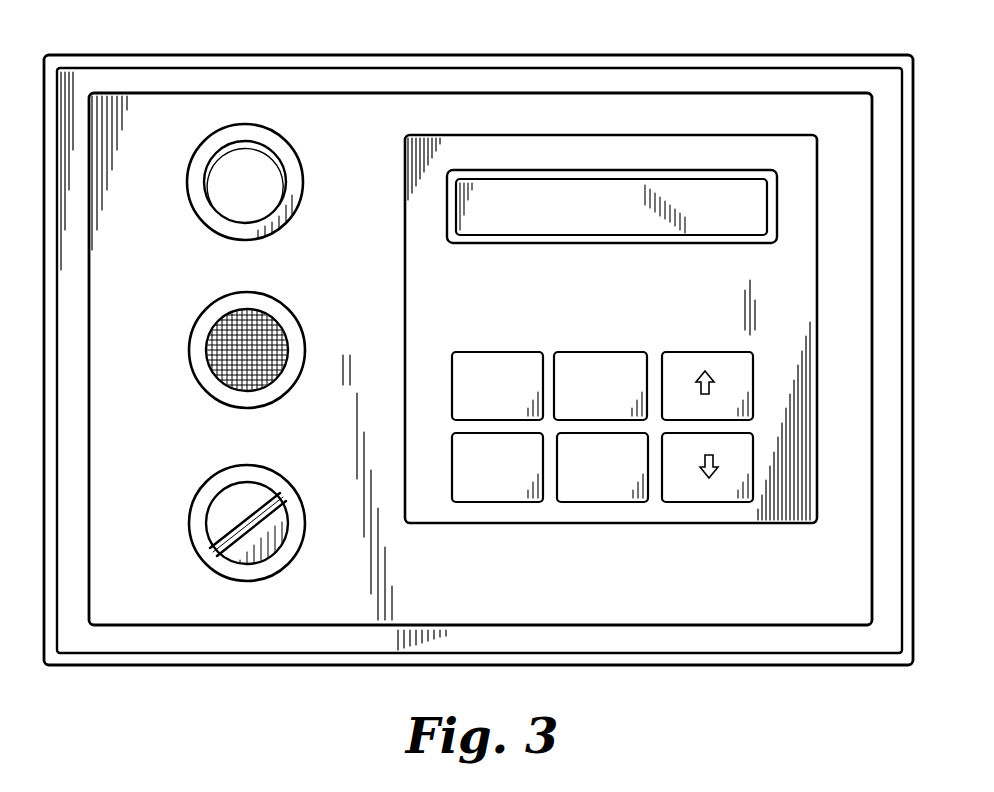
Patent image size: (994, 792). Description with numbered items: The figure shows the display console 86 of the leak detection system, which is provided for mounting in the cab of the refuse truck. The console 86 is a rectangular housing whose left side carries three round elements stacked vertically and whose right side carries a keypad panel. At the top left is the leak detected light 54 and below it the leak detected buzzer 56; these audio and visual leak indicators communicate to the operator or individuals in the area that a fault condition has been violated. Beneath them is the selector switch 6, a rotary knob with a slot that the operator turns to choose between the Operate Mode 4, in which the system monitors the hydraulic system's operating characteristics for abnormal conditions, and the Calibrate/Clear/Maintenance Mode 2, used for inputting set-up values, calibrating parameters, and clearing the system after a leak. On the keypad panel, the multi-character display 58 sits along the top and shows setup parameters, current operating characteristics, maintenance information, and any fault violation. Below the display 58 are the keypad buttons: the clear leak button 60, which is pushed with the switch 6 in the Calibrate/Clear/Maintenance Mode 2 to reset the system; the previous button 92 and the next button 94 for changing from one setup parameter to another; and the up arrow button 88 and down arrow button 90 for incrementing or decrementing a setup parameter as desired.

The Calibrate/Clear/Maintenance Mode 2 is at (257, 509).
The Operate Mode 4 is at (269, 494).
The selector switch 6 is at (279, 546).
The leak detected light 54 is at (265, 157).
The leak detected buzzer 56 is at (267, 315).
The multi-character display 58 is at (615, 213).
The clear leak button 60 is at (476, 358).
The display console 86 is at (728, 618).
The up arrow button 88 is at (693, 352).
The down arrow button 90 is at (700, 502).
The previous button 92 is at (580, 353).
The next button 94 is at (597, 502).